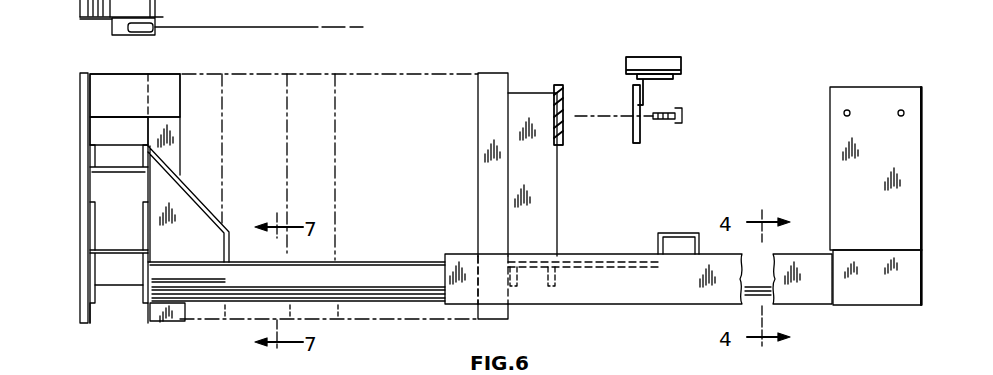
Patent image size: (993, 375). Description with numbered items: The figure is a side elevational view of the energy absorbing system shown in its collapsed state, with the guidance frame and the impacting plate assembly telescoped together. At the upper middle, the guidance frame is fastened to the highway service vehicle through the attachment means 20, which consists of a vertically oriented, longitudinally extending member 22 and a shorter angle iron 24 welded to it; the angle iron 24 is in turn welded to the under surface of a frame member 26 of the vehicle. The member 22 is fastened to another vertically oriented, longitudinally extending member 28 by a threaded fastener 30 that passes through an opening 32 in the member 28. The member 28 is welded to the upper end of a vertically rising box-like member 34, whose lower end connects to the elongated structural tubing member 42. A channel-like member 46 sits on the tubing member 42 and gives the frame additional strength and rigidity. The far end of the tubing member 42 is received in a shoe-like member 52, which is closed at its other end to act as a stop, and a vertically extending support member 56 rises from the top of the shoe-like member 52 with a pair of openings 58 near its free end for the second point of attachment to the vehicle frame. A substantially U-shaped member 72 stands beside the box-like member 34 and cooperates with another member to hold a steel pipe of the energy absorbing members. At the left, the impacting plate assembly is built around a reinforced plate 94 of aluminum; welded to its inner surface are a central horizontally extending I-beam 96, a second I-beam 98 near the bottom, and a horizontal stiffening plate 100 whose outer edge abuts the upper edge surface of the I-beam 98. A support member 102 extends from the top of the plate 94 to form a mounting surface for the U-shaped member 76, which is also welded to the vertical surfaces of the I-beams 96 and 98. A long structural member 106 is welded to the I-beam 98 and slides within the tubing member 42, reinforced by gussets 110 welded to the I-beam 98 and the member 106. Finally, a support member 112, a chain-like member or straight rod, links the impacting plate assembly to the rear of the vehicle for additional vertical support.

The attachment means 20 is at (628, 90).
The vertically oriented, longitudinally extending member 22 is at (641, 135).
The angle iron 24 is at (660, 79).
The frame member 26 is at (667, 56).
The vertically oriented, longitudinally extending member 28 is at (563, 140).
The threaded fasteners 30 is at (683, 116).
The openings 32 is at (563, 116).
The box-like member 34 is at (530, 98).
The structural tubing member 42 is at (605, 288).
The channel-like member 46 is at (675, 233).
The shoe-like member 52 is at (880, 298).
The vertically extending support member 56 is at (912, 148).
The openings 58 is at (901, 109).
The U-shaped member 72 is at (490, 75).
The U-shaped member 76 is at (148, 128).
The reinforced plate 94 is at (78, 96).
The horizontally extending I-beam 96 is at (115, 172).
The second horizontally extending I-beam 98 is at (120, 285).
The stiffening plate 100 is at (120, 250).
The support member 102 is at (135, 107).
The structural member 106 is at (396, 268).
The gussets 110 is at (202, 200).
The support member 112 is at (259, 26).